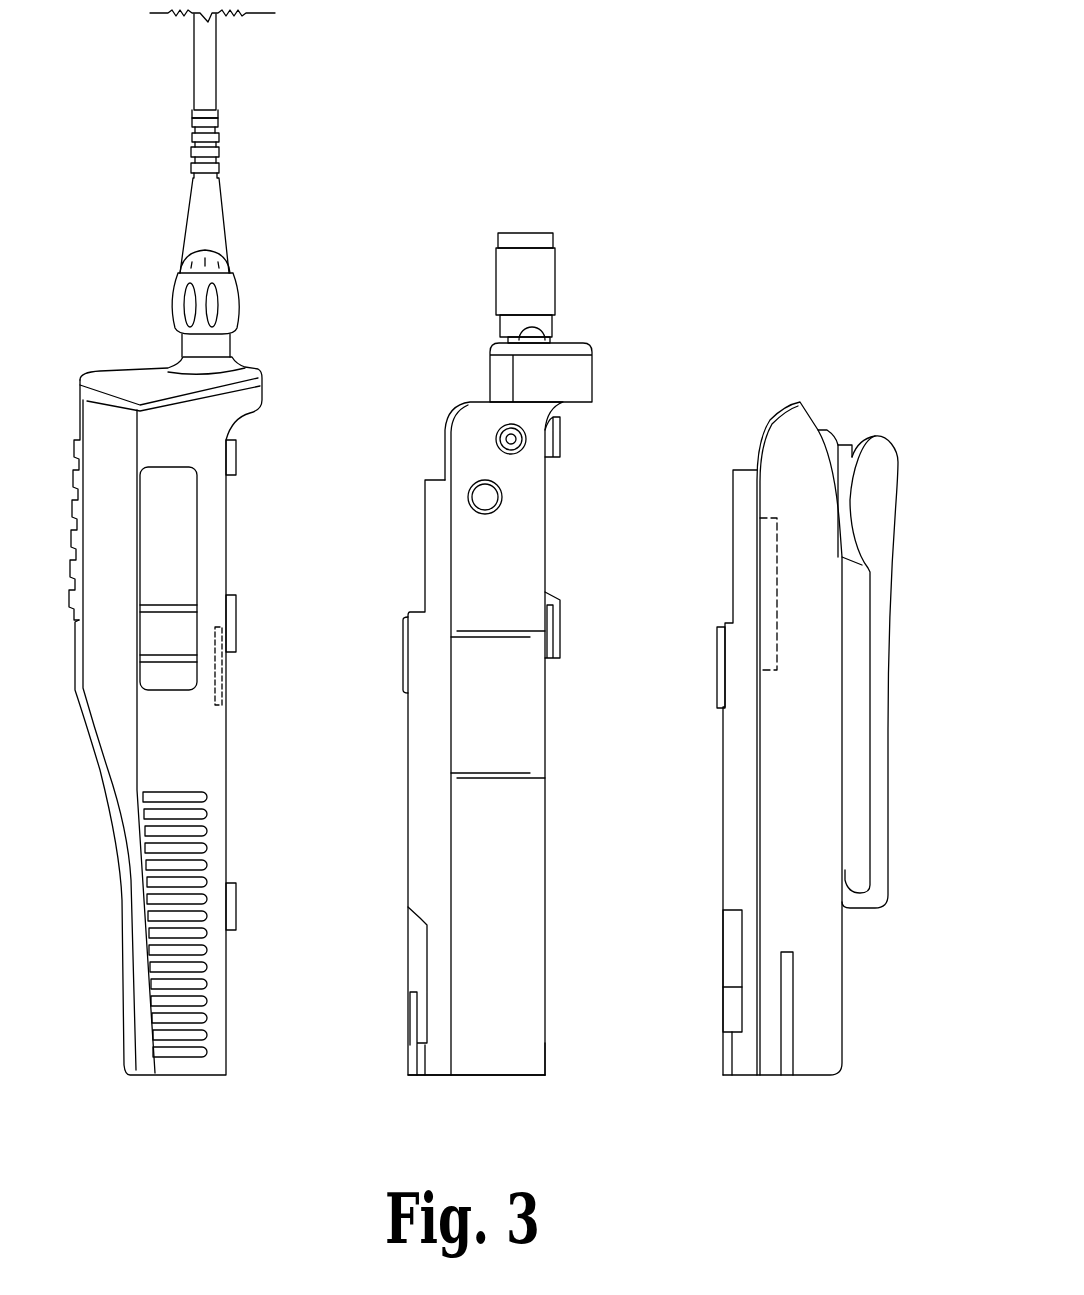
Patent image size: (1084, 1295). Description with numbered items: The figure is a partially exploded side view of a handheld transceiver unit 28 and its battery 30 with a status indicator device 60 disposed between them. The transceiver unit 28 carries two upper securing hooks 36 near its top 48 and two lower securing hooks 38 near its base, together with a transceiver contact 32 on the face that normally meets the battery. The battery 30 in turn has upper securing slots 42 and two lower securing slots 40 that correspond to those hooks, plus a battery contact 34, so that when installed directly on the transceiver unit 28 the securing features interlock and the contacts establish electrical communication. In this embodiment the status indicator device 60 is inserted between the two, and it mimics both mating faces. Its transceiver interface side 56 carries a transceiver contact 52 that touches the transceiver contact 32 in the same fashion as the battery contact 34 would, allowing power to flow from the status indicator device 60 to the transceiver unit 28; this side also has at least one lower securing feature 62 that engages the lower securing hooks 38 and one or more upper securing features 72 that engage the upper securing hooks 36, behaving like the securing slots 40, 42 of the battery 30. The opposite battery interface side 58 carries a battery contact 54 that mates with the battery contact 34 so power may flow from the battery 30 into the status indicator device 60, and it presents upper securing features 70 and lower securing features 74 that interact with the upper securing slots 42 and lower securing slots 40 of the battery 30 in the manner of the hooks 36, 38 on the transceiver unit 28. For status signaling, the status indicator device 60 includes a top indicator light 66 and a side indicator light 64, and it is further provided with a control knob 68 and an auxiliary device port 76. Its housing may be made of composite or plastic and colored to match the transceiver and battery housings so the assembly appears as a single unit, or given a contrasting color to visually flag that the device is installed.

The transceiver unit 28 is at (80, 380).
The battery 30 is at (803, 423).
The transceiver contact 32 is at (237, 640).
The battery contact 34 is at (717, 658).
The upper securing hooks 36 is at (237, 457).
The lower securing hooks 38 is at (237, 907).
The lower securing slots 40 is at (732, 1004).
The upper securing slots 42 is at (760, 535).
The top 48 is at (893, 462).
The transceiver contact 52 is at (403, 630).
The battery contact 54 is at (561, 625).
The transceiver interface side 56 is at (408, 870).
The battery interface side 58 is at (545, 865).
The status indicator device 60 is at (503, 1075).
The lower securing feature 62 is at (410, 1055).
The side indicator light 64 is at (500, 426).
The top indicator light 66 is at (534, 333).
The control knob 68 is at (550, 257).
The upper securing features 70 is at (561, 447).
The upper securing features 72 is at (445, 468).
The lower securing features 74 is at (545, 1043).
The auxiliary device port 76 is at (487, 497).